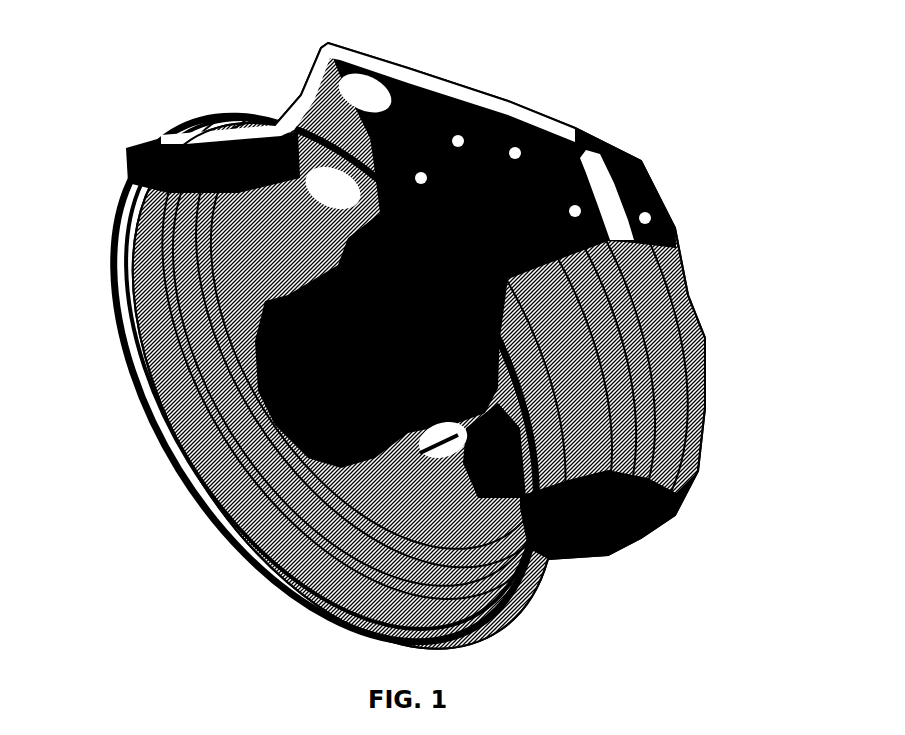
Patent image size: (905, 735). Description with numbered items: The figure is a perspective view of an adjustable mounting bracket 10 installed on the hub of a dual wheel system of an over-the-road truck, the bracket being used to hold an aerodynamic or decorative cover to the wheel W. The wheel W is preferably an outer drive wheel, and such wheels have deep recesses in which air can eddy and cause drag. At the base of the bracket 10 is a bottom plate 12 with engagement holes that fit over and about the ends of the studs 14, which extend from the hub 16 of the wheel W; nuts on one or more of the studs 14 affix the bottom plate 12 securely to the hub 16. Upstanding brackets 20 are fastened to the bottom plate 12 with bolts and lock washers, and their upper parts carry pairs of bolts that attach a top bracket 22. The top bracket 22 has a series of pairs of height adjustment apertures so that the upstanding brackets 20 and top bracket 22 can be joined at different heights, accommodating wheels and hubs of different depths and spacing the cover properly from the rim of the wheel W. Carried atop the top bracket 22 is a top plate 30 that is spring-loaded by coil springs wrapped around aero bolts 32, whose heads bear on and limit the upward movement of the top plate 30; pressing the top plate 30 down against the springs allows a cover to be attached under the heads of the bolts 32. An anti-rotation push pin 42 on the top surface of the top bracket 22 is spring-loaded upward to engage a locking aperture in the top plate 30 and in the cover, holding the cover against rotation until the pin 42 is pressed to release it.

The adjustable mounting bracket 10 is at (183, 125).
The bottom plate 12 is at (505, 340).
The studs 14 is at (587, 133).
The hub 16 is at (647, 175).
The upstanding brackets 20 is at (518, 407).
The top bracket 22 is at (243, 557).
The top plate 30 is at (285, 392).
The aero bolts 32 is at (207, 503).
The anti-rotation push pin 42 is at (255, 333).
The wheel W is at (675, 360).